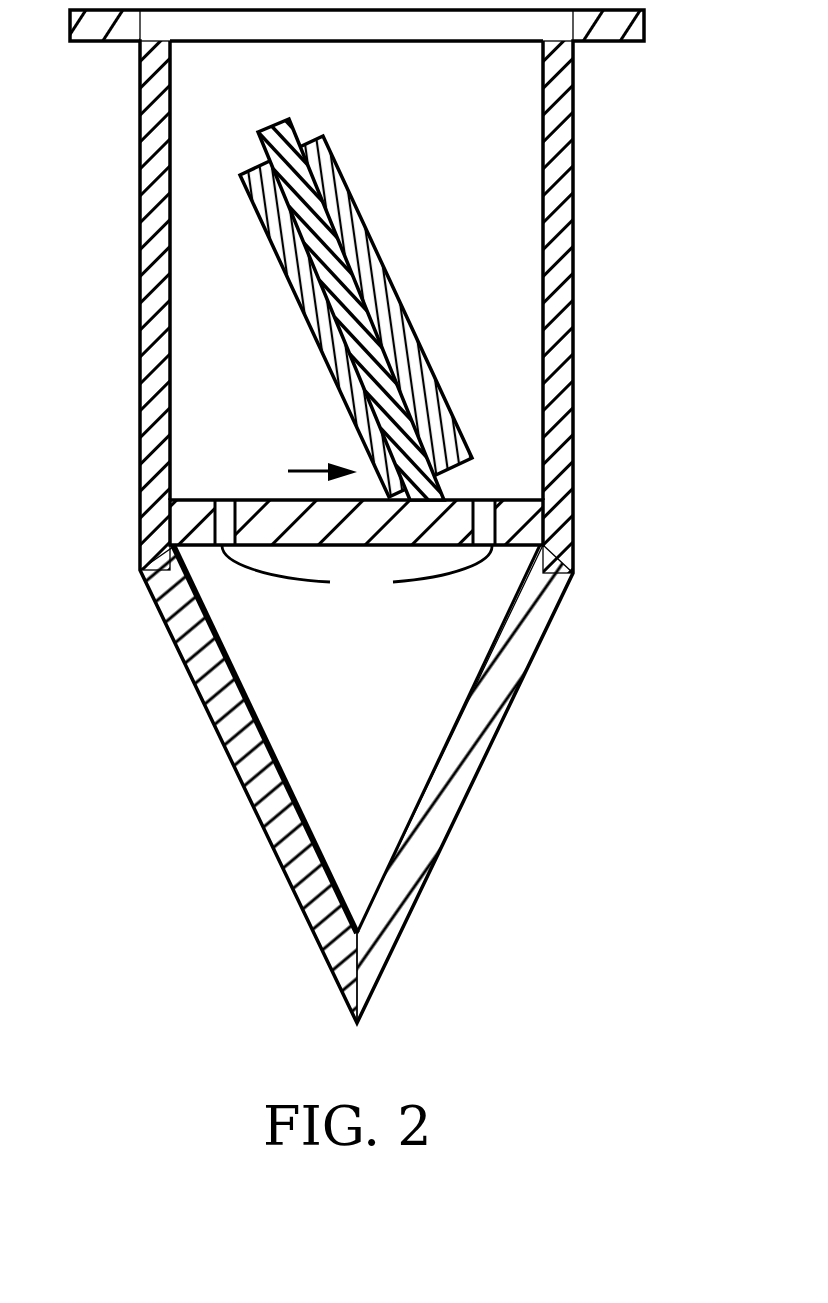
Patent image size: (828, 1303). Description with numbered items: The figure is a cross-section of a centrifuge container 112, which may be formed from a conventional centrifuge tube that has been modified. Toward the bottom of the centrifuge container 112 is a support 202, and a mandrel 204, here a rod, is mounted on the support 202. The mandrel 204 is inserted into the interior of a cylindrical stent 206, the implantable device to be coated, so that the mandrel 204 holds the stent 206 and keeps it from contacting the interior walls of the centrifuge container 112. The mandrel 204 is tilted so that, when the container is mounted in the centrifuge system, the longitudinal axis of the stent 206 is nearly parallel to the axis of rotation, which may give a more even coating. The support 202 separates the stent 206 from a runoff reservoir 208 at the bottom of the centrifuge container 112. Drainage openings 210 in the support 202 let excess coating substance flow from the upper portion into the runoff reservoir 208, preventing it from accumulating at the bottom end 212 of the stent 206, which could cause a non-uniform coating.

The centrifuge container 112 is at (574, 143).
The support 202 is at (511, 500).
The mandrel 204 is at (296, 131).
The stent 206 is at (353, 197).
The runoff reservoir 208 is at (388, 719).
The drainage openings 210 is at (357, 574).
The bottom end 212 is at (293, 472).